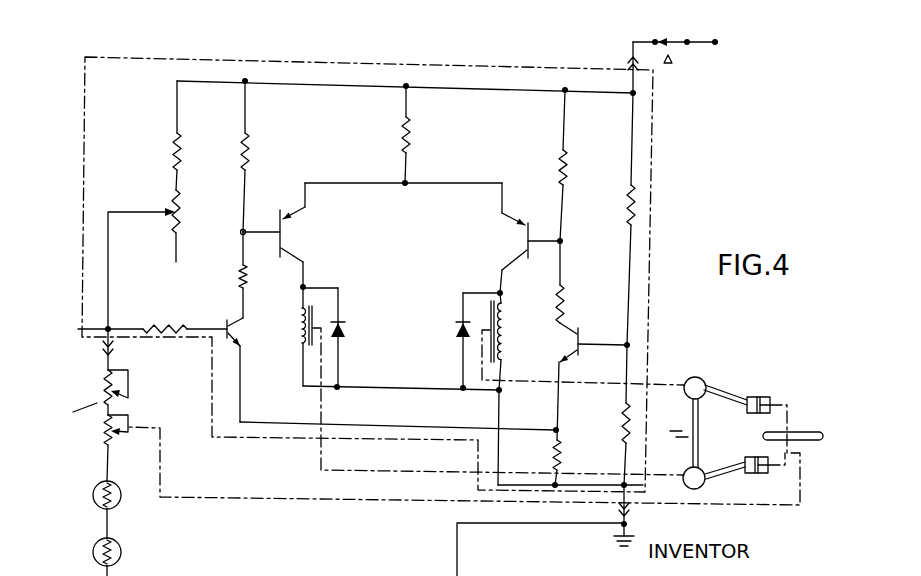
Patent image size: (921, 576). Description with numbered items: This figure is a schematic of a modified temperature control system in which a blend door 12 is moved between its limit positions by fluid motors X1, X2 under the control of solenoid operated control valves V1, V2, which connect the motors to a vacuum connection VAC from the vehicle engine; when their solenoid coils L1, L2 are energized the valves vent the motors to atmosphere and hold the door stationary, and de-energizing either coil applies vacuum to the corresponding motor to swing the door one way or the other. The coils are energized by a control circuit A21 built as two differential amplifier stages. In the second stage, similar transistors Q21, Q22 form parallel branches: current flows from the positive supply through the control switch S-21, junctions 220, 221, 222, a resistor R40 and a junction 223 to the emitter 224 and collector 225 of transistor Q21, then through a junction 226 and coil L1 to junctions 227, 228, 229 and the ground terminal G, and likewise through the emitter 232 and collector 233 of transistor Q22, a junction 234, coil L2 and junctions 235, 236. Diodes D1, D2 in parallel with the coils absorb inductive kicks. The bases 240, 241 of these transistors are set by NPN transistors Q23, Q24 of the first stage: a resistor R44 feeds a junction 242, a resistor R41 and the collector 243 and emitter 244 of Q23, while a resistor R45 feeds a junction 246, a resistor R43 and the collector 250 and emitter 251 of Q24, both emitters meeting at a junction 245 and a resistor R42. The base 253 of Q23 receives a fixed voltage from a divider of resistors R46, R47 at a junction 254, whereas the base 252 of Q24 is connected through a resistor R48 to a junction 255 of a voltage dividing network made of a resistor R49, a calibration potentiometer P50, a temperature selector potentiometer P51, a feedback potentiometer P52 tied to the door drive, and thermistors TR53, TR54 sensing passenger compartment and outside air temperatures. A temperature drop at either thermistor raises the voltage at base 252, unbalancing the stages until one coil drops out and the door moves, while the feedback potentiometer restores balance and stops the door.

The control circuit A21 is at (304, 57).
The control switch S-21 is at (675, 42).
The junction 220 is at (636, 93).
The junction 221 is at (562, 90).
The junction 222 is at (406, 89).
The junction 223 is at (405, 186).
The emitter 224 is at (514, 219).
The collector 225 is at (512, 264).
The junction 226 is at (503, 296).
The junction 227 is at (500, 392).
The junction 228 is at (557, 484).
The junction 229 is at (636, 485).
The emitter 232 is at (305, 213).
The collector 233 is at (292, 255).
The junction 234 is at (302, 288).
The junction 235 is at (338, 389).
The junction 236 is at (462, 389).
The base 240 is at (563, 241).
The base 241 is at (243, 230).
The junction 242 is at (563, 242).
The collector 243 is at (503, 342).
The emitter 244 is at (566, 363).
The junction 245 is at (558, 430).
The junction 246 is at (246, 84).
The collector 250 is at (242, 325).
The emitter 251 is at (240, 352).
The base 252 is at (198, 330).
The base 253 is at (630, 345).
The junction 254 is at (630, 346).
The junction 255 is at (105, 329).
The resistor R40 is at (411, 143).
The resistor R41 is at (564, 295).
The resistor R42 is at (556, 458).
The resistor R43 is at (244, 282).
The resistor R44 is at (567, 167).
The resistor R45 is at (250, 158).
The resistor R46 is at (636, 205).
The resistor R47 is at (655, 415).
The resistor R48 is at (162, 328).
The resistor R49 is at (176, 166).
The calibration potentiometer P50 is at (160, 210).
The temperature selector potentiometer P51 is at (106, 385).
The feedback potentiometer P52 is at (106, 440).
The transistor Q21 is at (518, 241).
The transistor Q22 is at (282, 236).
The transistor Q23 is at (592, 320).
The transistor Q24 is at (226, 323).
The diode D1 is at (461, 327).
The diode D2 is at (345, 328).
The solenoid coil L1 is at (504, 352).
The solenoid coil L2 is at (301, 346).
The first thermistor TR53 is at (92, 500).
The second thermistor TR54 is at (92, 557).
The AC voltage source VAC is at (676, 438).
The solenoid operated control valve V1 is at (715, 391).
The solenoid operated control valve V2 is at (714, 475).
The fluid motor X1 is at (763, 392).
The fluid motor X2 is at (760, 455).
The blend door 12 is at (808, 460).
The power supply terminal G is at (612, 540).